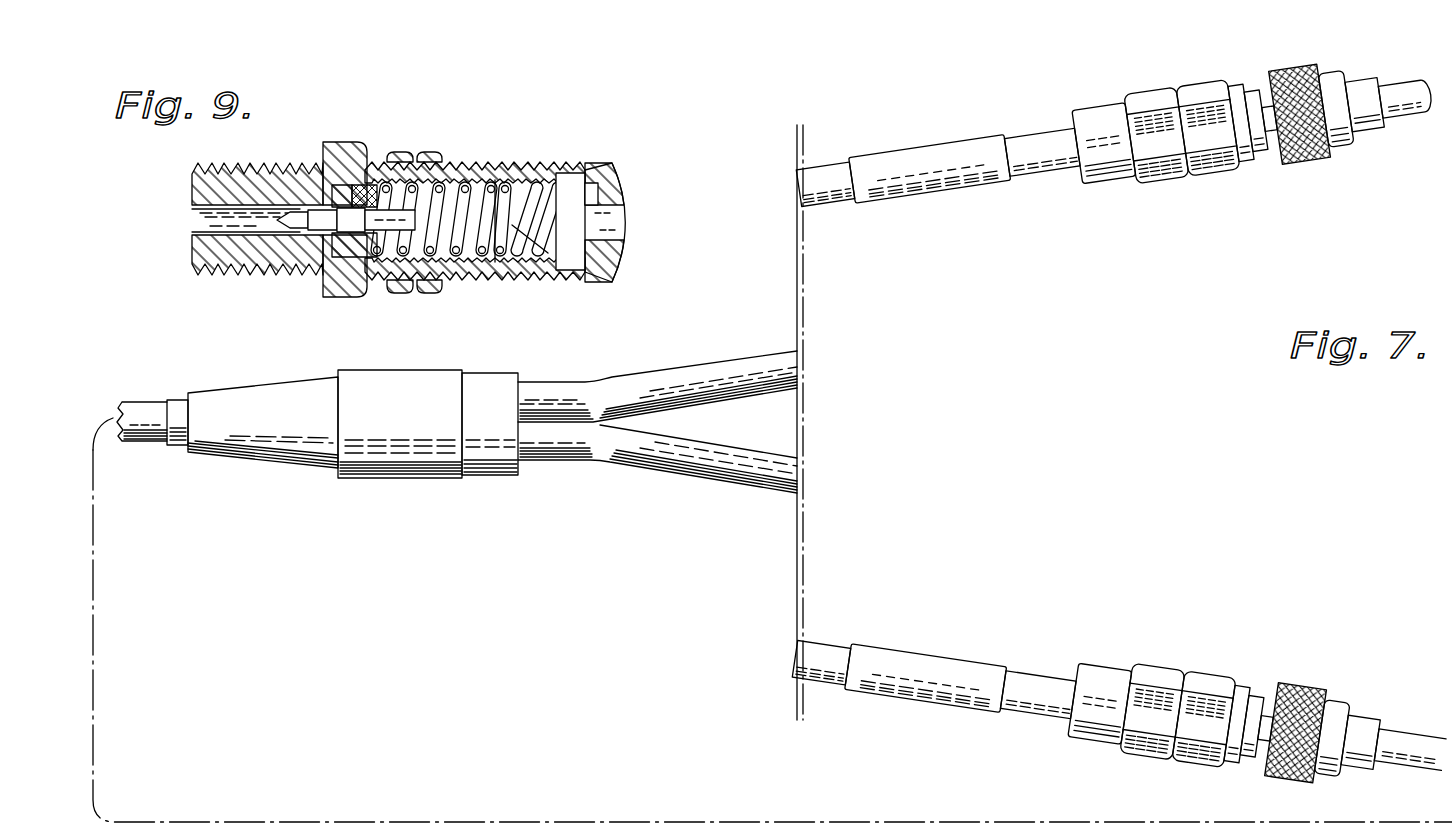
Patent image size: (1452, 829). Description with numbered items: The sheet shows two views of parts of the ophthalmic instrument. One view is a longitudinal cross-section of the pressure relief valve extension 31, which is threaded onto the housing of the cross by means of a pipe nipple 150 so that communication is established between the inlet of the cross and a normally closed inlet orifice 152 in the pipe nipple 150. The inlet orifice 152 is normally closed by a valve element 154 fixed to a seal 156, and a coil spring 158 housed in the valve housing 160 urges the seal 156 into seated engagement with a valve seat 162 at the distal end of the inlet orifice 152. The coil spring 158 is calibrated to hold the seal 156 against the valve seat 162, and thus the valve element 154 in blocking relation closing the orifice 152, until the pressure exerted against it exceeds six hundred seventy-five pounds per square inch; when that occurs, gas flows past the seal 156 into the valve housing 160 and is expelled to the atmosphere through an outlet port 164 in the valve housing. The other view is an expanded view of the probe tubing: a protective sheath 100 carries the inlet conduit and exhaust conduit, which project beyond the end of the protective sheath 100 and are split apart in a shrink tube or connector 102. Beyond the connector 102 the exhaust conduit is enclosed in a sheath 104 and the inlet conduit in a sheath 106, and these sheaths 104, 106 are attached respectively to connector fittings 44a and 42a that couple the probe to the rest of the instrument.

In FIG. 9, the pressure relief valve extension 31 is at (436, 134).
In FIG. 9, the pipe nipple 150 is at (236, 256).
In FIG. 9, the inlet orifice 152 is at (205, 225).
In FIG. 9, the valve element 154 is at (323, 226).
In FIG. 9, the seal 156 is at (346, 252).
In FIG. 9, the coil spring 158 is at (545, 253).
In FIG. 9, the valve housing 160 is at (500, 177).
In FIG. 9, the valve seat 162 is at (336, 198).
In FIG. 9, the outlet port 164 is at (618, 230).
In FIG. 7, the protective sheath 100 is at (150, 428).
In FIG. 7, the shrink tube or connector 102 is at (433, 380).
In FIG. 7, the sheath 104 is at (700, 365).
In FIG. 7, the sheath 106 is at (708, 472).
In FIG. 7, the connector fitting 44a is at (1220, 166).
In FIG. 7, the connector fitting 42a is at (1310, 690).